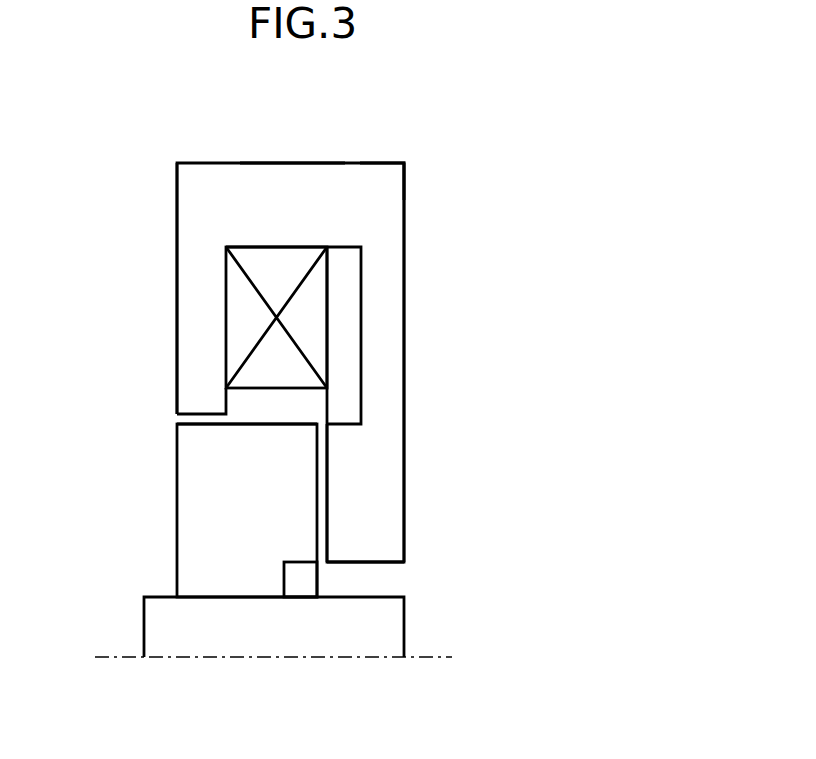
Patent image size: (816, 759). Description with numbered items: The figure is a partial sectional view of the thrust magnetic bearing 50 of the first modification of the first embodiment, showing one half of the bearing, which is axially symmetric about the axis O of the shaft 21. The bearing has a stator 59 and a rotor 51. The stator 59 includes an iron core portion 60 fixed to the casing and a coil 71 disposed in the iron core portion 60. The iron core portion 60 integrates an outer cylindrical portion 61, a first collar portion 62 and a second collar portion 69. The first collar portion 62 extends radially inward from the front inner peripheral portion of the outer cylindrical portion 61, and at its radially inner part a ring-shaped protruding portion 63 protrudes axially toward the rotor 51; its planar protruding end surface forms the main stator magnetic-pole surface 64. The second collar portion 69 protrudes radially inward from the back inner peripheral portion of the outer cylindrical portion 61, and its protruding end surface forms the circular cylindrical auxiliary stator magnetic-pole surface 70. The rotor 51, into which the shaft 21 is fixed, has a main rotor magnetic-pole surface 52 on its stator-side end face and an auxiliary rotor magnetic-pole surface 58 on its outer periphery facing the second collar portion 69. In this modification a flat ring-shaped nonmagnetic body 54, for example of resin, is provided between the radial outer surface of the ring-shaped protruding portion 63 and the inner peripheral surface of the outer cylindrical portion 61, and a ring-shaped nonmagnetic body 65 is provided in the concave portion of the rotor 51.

The thrust magnetic bearing 50 is at (186, 131).
The stator 59 is at (293, 161).
The iron core portion 60 is at (388, 161).
The outer cylindrical portion 61 is at (378, 193).
The first collar portion 62 is at (378, 325).
The nonmagnetic body 54 is at (343, 280).
The coil 71 is at (298, 268).
The second collar portion 69 is at (195, 295).
The auxiliary stator magnetic-pole surface 70 is at (185, 414).
The main stator magnetic-pole surface 64 is at (328, 445).
The ring-shaped protruding portion 63 is at (340, 450).
The main rotor magnetic-pole surface 52 is at (325, 524).
The rotor 51 is at (176, 483).
The auxiliary rotor magnetic-pole surface 58 is at (200, 424).
The nonmagnetic body 65 is at (303, 579).
The shaft 21 is at (163, 618).
The axis O is at (109, 657).